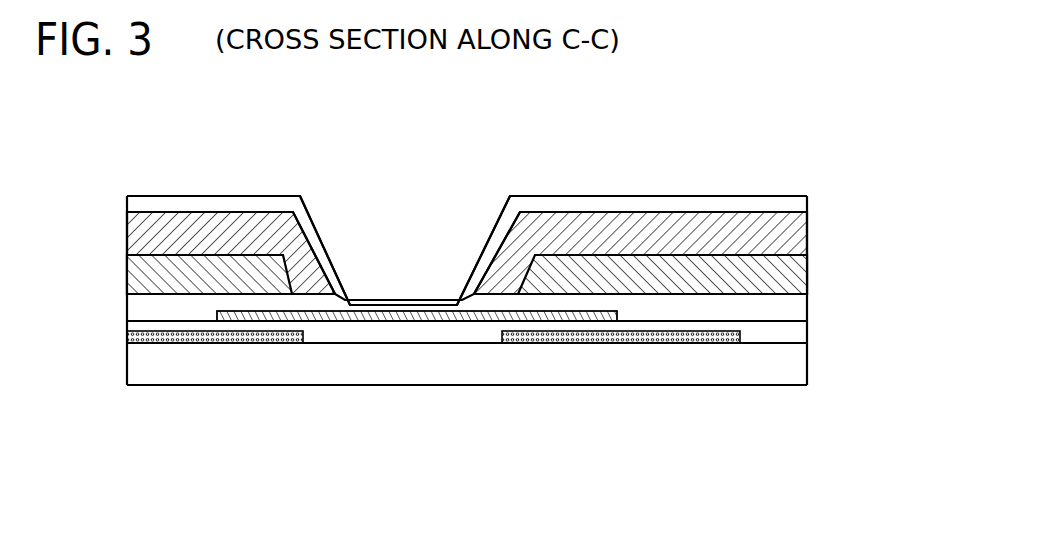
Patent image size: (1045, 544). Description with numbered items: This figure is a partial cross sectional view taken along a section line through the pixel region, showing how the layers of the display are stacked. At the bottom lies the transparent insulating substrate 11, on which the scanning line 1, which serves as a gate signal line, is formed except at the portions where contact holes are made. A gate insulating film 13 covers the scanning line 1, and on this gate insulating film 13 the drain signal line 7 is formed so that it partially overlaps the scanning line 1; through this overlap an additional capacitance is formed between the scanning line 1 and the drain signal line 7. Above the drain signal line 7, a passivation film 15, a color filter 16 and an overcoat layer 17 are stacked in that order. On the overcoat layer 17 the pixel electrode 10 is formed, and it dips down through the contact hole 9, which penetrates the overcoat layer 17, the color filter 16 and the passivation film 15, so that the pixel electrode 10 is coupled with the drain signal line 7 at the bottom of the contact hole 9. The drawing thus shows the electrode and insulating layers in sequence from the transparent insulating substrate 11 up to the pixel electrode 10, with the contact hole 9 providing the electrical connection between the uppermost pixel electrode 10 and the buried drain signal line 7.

The scanning line 1 is at (722, 341).
The drain signal line 7 is at (325, 317).
The contact hole 9 is at (478, 152).
The pixel electrode 10 is at (800, 204).
The transparent insulating substrate 11 is at (627, 370).
The gate insulating film 13 is at (798, 333).
The passivation film 15 is at (798, 307).
The color filter 16 is at (800, 273).
The overcoat layer 17 is at (802, 232).